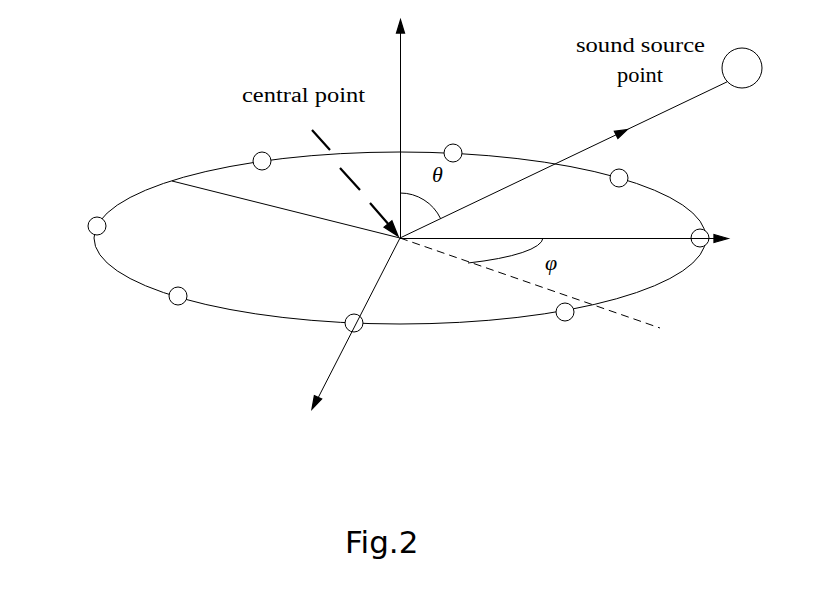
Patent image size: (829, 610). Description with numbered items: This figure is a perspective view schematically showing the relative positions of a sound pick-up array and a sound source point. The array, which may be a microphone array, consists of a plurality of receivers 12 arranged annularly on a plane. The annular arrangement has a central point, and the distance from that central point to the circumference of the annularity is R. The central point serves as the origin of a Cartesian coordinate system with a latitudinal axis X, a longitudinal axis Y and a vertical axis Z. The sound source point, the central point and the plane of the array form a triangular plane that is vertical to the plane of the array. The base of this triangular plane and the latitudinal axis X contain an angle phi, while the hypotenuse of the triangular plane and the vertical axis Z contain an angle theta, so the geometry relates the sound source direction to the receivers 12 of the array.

The receivers 12 is at (92, 222).
The latitudinal axis X is at (564, 255).
The longitudinal axis Y is at (356, 323).
The vertical axis Z is at (413, 123).
The distance between the central point and the circumference R is at (286, 209).